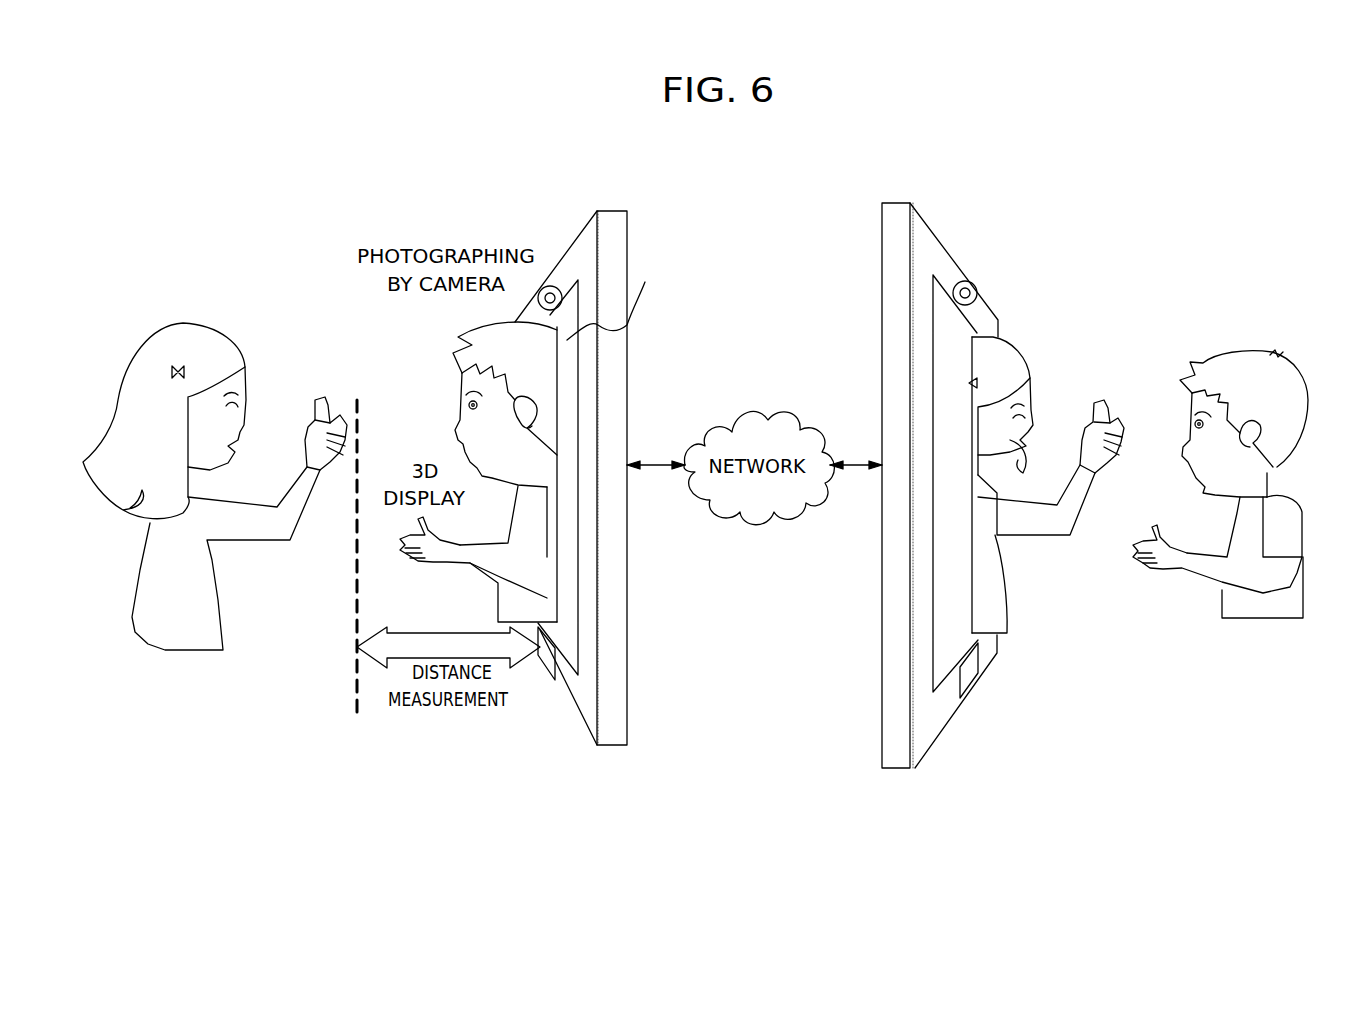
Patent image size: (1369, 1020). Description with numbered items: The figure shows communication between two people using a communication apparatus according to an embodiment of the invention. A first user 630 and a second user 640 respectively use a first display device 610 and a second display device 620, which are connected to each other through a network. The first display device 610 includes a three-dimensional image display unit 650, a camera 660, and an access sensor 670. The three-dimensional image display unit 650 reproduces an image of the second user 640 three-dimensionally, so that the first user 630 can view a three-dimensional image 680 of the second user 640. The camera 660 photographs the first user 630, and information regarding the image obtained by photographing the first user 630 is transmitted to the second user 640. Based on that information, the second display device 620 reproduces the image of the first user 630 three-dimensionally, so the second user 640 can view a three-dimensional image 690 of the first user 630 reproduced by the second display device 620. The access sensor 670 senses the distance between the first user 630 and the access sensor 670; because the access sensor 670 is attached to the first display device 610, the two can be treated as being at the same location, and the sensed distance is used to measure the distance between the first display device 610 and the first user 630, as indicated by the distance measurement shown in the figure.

The first display device 610 is at (612, 215).
The second display device 620 is at (910, 203).
The first user 630 is at (185, 325).
The second user 640 is at (1233, 360).
The 3D image display unit 650 is at (619, 298).
The camera 660 is at (550, 283).
The access sensor 670 is at (550, 657).
The 3D image of the second user 680 is at (467, 337).
The 3D image of the first user 690 is at (1012, 353).